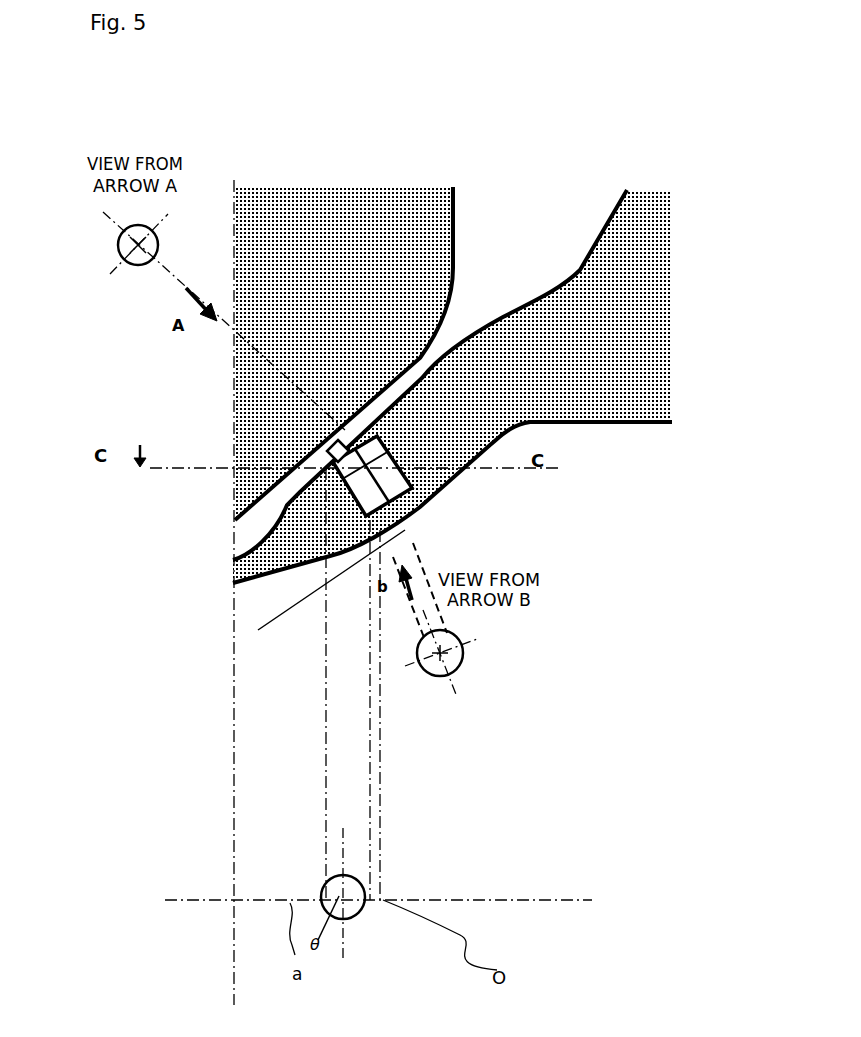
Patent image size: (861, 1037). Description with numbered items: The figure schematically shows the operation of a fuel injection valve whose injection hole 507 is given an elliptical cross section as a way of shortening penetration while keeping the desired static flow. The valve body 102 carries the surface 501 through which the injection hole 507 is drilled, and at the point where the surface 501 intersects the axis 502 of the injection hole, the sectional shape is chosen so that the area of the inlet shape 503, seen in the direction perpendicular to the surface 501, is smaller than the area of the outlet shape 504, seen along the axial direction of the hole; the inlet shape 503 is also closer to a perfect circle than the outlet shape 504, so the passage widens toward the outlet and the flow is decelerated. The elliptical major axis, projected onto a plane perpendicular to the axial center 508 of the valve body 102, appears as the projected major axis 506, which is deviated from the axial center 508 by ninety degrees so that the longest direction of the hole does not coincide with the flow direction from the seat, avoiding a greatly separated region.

The housing block 102 is at (320, 223).
The surface 501 is at (430, 373).
The axis of the injection hole 502 is at (262, 628).
The inlet shape 503 is at (152, 260).
The outlet shape 504 is at (460, 668).
The projected major axis 506 is at (343, 843).
The injection hole 507 is at (420, 475).
The axial center of the valve body 508 is at (234, 224).